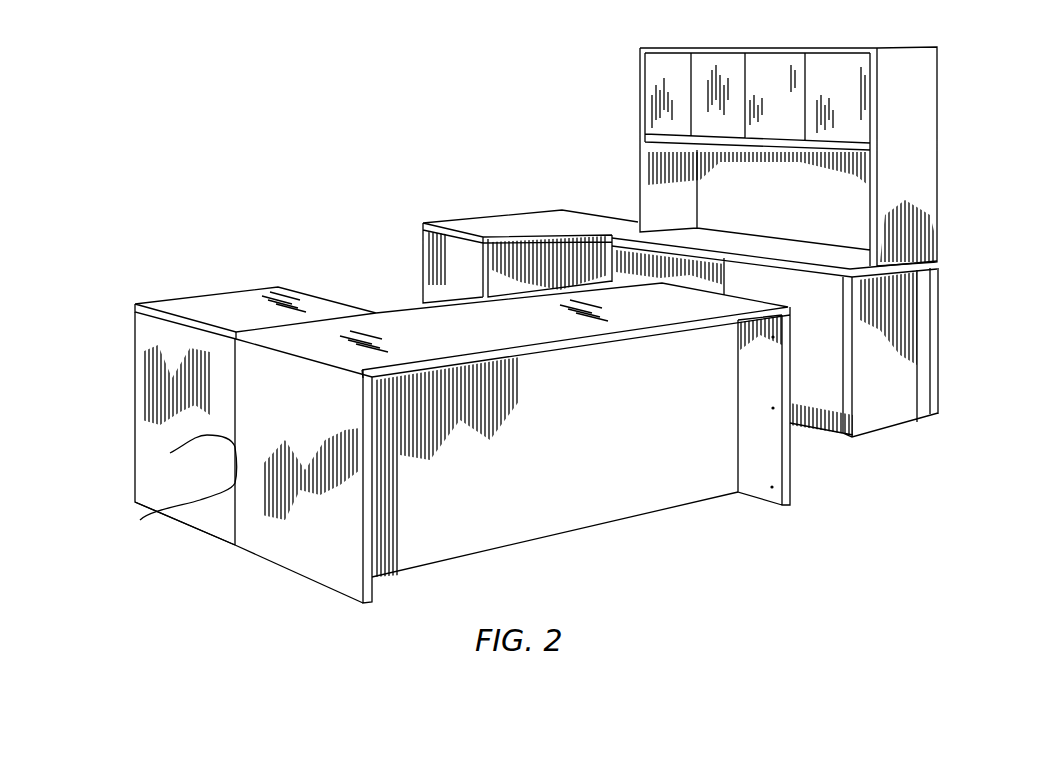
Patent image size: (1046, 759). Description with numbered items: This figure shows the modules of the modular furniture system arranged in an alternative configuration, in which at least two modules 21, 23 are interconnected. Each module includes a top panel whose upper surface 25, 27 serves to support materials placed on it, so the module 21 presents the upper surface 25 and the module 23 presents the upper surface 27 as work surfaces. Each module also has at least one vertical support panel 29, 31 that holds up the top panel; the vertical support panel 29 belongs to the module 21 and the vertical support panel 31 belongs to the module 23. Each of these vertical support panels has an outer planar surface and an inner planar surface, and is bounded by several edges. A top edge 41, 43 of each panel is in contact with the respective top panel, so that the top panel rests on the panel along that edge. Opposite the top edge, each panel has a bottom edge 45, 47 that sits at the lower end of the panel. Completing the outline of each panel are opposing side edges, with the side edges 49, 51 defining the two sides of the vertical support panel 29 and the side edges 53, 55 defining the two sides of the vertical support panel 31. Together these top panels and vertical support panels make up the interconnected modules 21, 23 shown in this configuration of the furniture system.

The module 21 is at (121, 432).
The module 23 is at (335, 651).
The upper surface 25 is at (238, 308).
The upper surface 27 is at (412, 323).
The vertical support panel 29 is at (150, 350).
The vertical support panel 31 is at (315, 557).
The top edge 41 is at (170, 308).
The top edge 43 is at (308, 355).
The bottom edge 45 is at (192, 527).
The bottom edge 47 is at (270, 563).
The side edge 49 is at (135, 390).
The side edge 51 is at (140, 520).
The side edge 53 is at (170, 453).
The side edge 55 is at (372, 470).